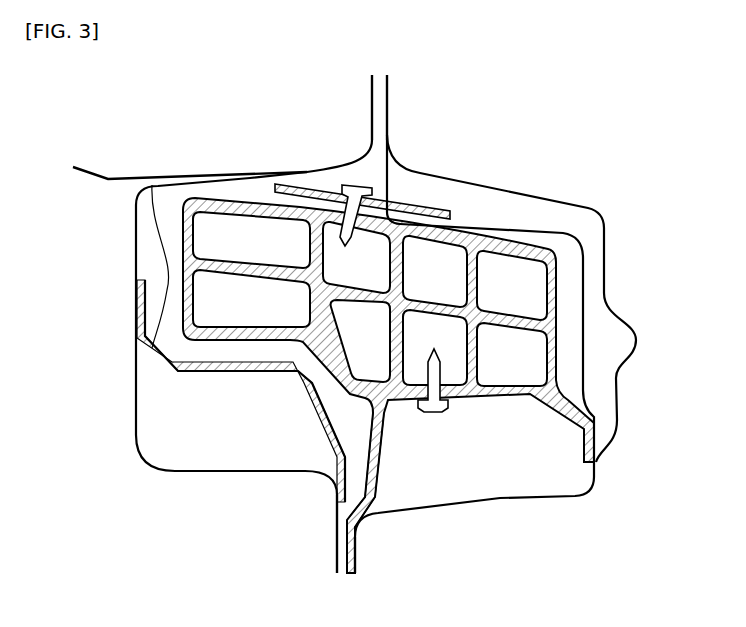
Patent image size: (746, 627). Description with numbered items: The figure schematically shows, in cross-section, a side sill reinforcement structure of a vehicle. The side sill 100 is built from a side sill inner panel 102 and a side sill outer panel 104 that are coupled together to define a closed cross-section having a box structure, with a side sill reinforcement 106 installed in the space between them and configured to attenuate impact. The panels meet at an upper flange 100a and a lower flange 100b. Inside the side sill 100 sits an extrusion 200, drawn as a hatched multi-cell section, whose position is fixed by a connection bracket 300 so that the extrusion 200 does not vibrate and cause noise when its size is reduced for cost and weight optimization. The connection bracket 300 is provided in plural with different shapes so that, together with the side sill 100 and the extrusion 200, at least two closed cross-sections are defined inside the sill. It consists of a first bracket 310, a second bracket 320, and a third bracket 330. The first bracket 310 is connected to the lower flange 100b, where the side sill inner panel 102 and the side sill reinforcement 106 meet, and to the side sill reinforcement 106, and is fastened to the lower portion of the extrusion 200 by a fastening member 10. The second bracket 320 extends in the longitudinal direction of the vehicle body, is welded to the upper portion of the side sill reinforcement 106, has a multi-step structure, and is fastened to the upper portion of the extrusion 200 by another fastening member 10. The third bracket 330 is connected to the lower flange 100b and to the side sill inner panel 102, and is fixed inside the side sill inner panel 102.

The fastening member 10 is at (357, 186).
The side sill 100 is at (353, 327).
The upper flange 100a is at (388, 100).
The lower flange 100b is at (345, 543).
The side sill inner panel 102 is at (134, 252).
The side sill outer panel 104 is at (546, 197).
The side sill reinforcement 106 is at (576, 248).
The extrusion 200 is at (551, 288).
The connection bracket 300 is at (292, 301).
The first bracket 310 is at (373, 420).
The second bracket 320 is at (314, 188).
The third bracket 330 is at (152, 185).